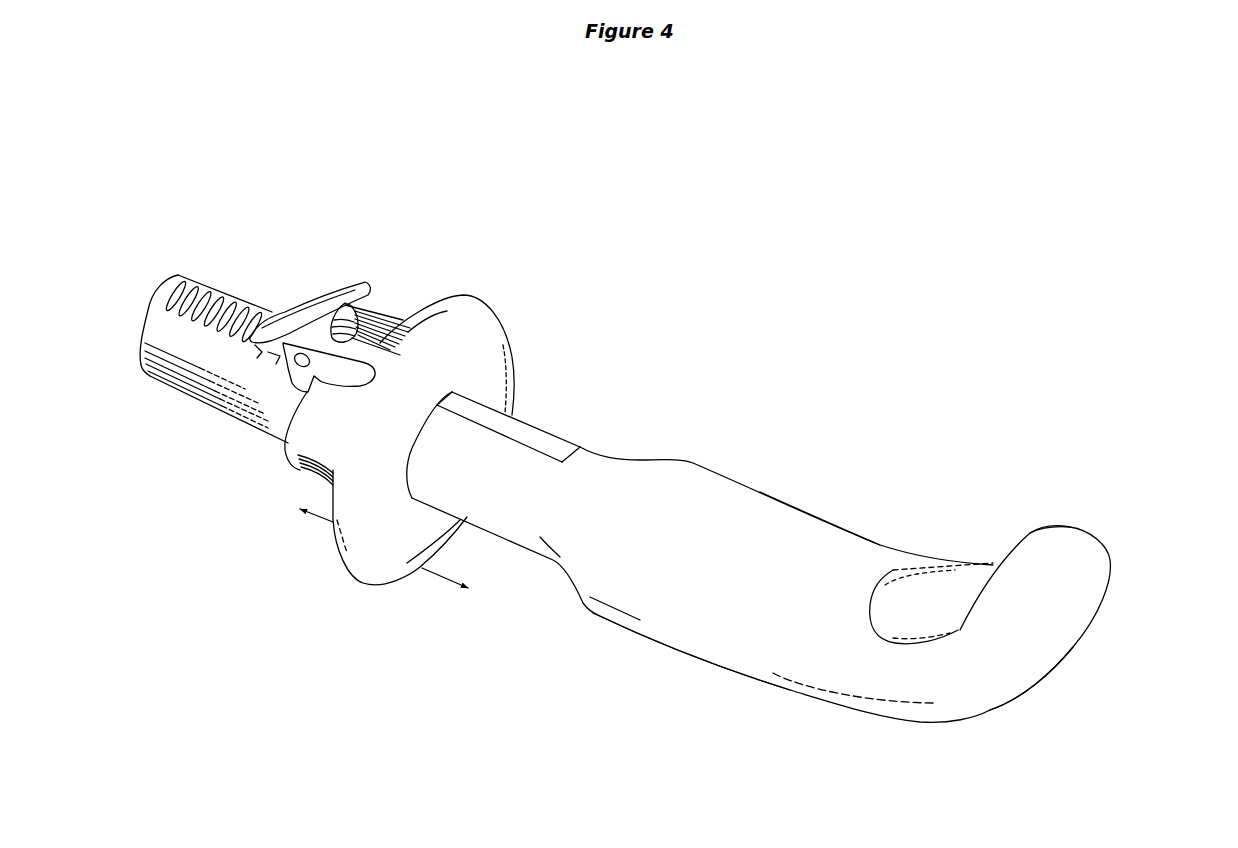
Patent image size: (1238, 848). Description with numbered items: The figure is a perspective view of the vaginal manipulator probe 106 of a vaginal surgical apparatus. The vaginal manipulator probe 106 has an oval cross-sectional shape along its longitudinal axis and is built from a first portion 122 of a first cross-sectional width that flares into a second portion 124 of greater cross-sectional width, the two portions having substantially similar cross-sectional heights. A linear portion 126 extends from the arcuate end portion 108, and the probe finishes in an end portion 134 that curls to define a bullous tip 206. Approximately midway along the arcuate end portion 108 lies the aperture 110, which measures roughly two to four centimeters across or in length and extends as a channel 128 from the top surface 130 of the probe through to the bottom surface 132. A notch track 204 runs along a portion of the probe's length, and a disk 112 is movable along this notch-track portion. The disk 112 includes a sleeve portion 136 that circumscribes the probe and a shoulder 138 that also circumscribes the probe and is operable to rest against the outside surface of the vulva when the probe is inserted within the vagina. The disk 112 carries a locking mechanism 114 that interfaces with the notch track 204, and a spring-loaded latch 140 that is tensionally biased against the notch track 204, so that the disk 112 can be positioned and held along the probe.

The vaginal manipulator probe 106 is at (515, 624).
The arcuate end portion 108 is at (955, 683).
The aperture 110 is at (893, 573).
The disk 112 is at (357, 583).
The locking mechanism 114 is at (377, 313).
The first portion 122 is at (193, 385).
The second portion 124 is at (700, 460).
The linear portion 126 is at (540, 443).
The channel 128 is at (927, 590).
The top surface 130 is at (753, 680).
The bottom surface 132 is at (787, 521).
The end portion 134 is at (1100, 567).
The sleeve portion 136 is at (300, 442).
The shoulder 138 is at (481, 312).
The spring-loaded latch 140 is at (311, 307).
The notch track 204 is at (181, 280).
The bullous tip 206 is at (1027, 533).